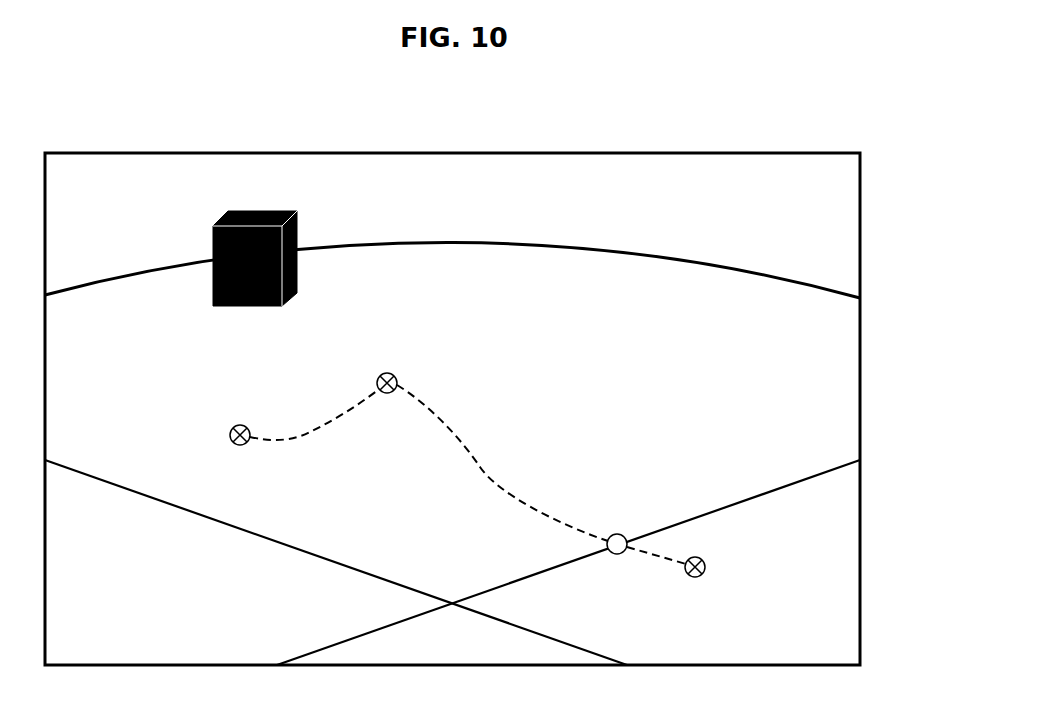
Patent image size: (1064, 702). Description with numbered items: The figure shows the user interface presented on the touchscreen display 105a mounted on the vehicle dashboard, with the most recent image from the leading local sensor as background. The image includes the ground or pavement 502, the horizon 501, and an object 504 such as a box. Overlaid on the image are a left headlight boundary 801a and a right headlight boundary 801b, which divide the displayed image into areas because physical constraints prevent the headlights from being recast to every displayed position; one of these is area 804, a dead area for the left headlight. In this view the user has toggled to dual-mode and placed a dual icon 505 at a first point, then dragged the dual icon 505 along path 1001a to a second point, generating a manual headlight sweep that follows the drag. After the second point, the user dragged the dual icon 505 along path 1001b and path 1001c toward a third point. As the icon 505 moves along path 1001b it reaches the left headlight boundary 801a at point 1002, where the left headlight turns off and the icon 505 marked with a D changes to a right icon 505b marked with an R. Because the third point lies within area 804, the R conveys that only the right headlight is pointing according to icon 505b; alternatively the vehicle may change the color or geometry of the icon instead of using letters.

The touchscreen display 105a is at (808, 140).
The horizon 501 is at (561, 242).
The ground or pavement 502 is at (173, 366).
The object 504 is at (252, 210).
The dual icon 505 is at (378, 376).
The right icon 505b is at (701, 578).
The left headlight boundary 801a is at (509, 582).
The right headlight boundary 801b is at (345, 566).
The area 804 is at (813, 524).
The path 1001a is at (285, 440).
The path 1001b is at (484, 464).
The path 1001c is at (644, 553).
The point 1002 is at (622, 534).